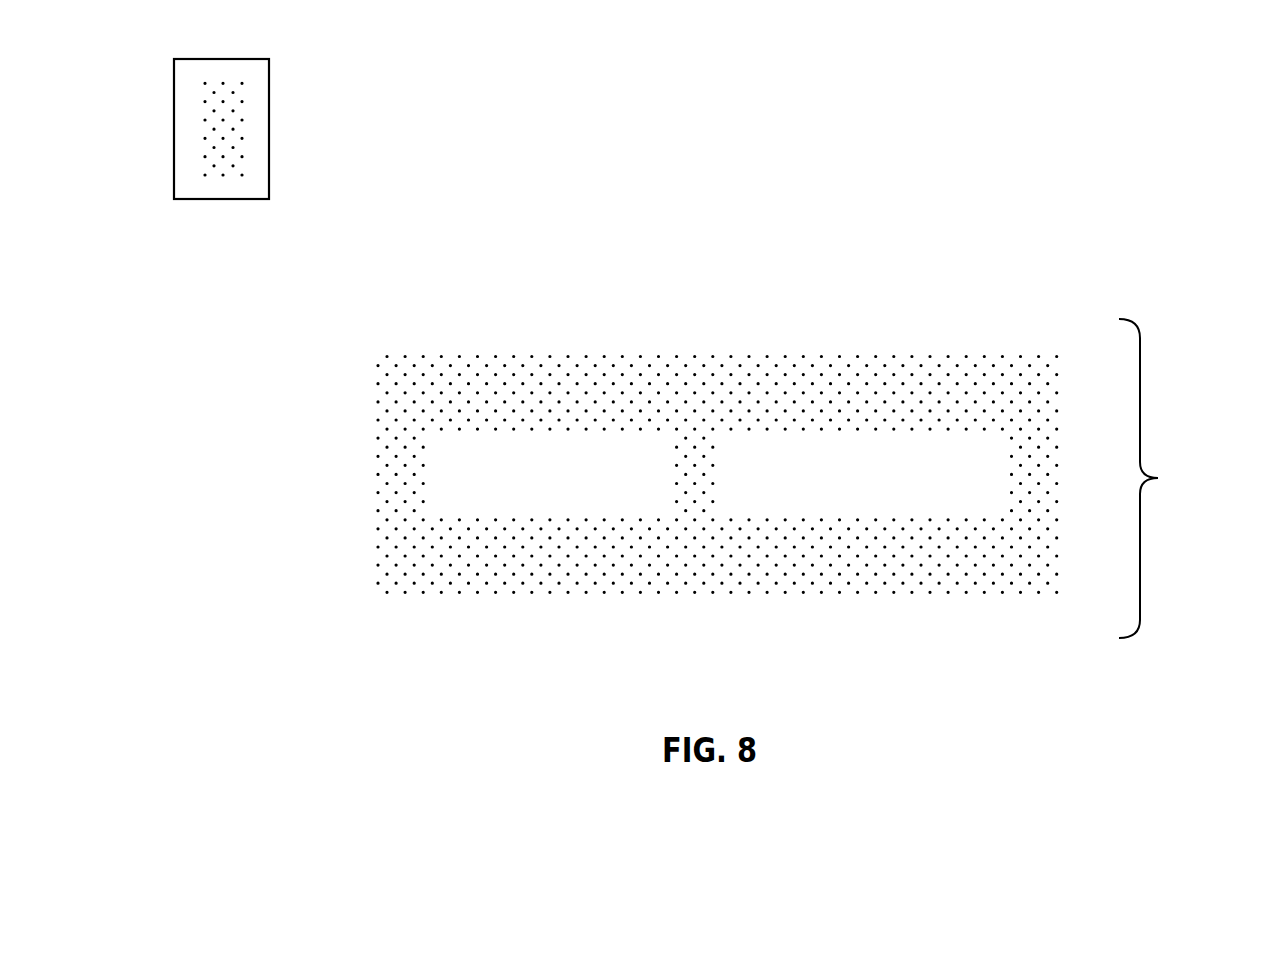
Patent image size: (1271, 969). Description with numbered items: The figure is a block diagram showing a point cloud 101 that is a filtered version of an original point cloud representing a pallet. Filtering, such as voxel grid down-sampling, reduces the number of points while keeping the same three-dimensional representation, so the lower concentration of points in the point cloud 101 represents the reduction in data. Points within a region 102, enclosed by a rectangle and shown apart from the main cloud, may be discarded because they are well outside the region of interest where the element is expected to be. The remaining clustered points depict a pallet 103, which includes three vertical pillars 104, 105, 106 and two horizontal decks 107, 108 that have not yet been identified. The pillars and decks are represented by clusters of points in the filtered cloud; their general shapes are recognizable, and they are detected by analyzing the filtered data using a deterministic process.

The point cloud 101 is at (691, 448).
The region 102 is at (260, 158).
The pallet 103 is at (1158, 478).
The vertical pillar 104 is at (392, 471).
The vertical pillar 105 is at (692, 471).
The vertical pillar 106 is at (1027, 472).
The horizontal deck 107 is at (863, 363).
The horizontal deck 108 is at (922, 580).